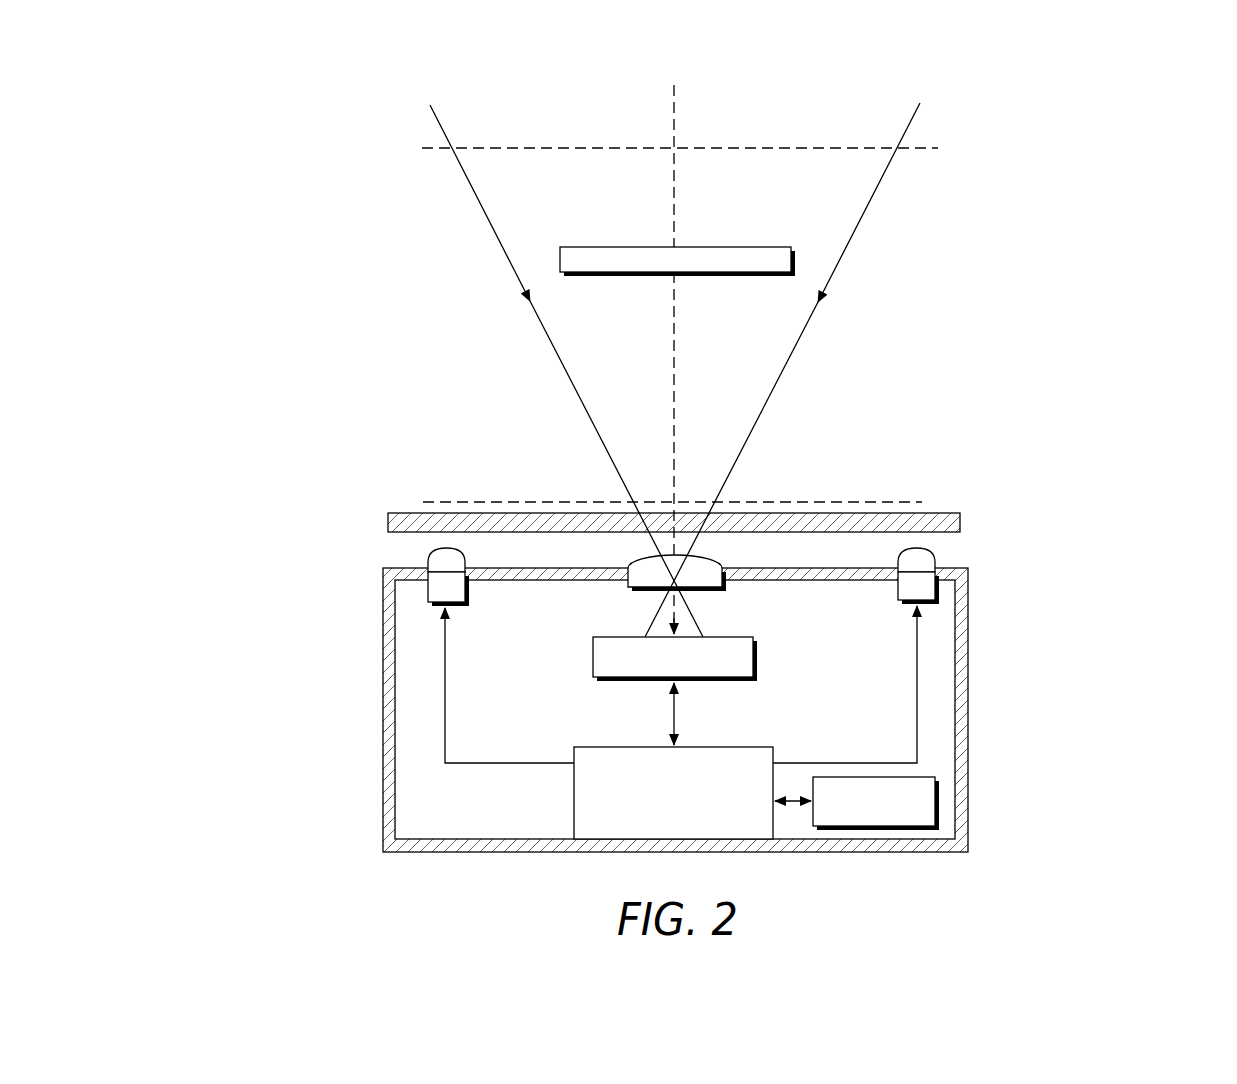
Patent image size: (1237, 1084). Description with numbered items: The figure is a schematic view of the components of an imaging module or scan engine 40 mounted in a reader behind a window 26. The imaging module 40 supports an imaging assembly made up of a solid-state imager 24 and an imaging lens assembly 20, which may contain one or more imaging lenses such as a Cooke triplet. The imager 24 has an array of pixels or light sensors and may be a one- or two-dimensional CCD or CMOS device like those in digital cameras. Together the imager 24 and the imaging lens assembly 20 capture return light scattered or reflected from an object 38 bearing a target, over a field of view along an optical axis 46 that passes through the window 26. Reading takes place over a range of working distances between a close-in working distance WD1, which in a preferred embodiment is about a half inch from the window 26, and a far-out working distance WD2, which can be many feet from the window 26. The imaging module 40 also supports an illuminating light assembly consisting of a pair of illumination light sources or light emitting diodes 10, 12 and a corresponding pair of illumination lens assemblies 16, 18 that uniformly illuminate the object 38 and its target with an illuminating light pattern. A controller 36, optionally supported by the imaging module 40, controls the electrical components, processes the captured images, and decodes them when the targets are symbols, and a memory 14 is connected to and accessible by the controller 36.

The illumination light source 10 is at (935, 590).
The illumination light source 12 is at (428, 592).
The memory 14 is at (925, 777).
The illumination lens assembly 16 is at (935, 558).
The illumination lens assembly 18 is at (428, 560).
The imaging lens assembly 20 is at (703, 557).
The imager 24 is at (630, 636).
The window 26 is at (410, 513).
The controller 36 is at (574, 780).
The object 38 is at (614, 246).
The imaging module 40 is at (362, 828).
The optical axis 46 is at (683, 104).
The close-in working distance WD1 is at (900, 500).
The far-out working distance WD2 is at (574, 147).